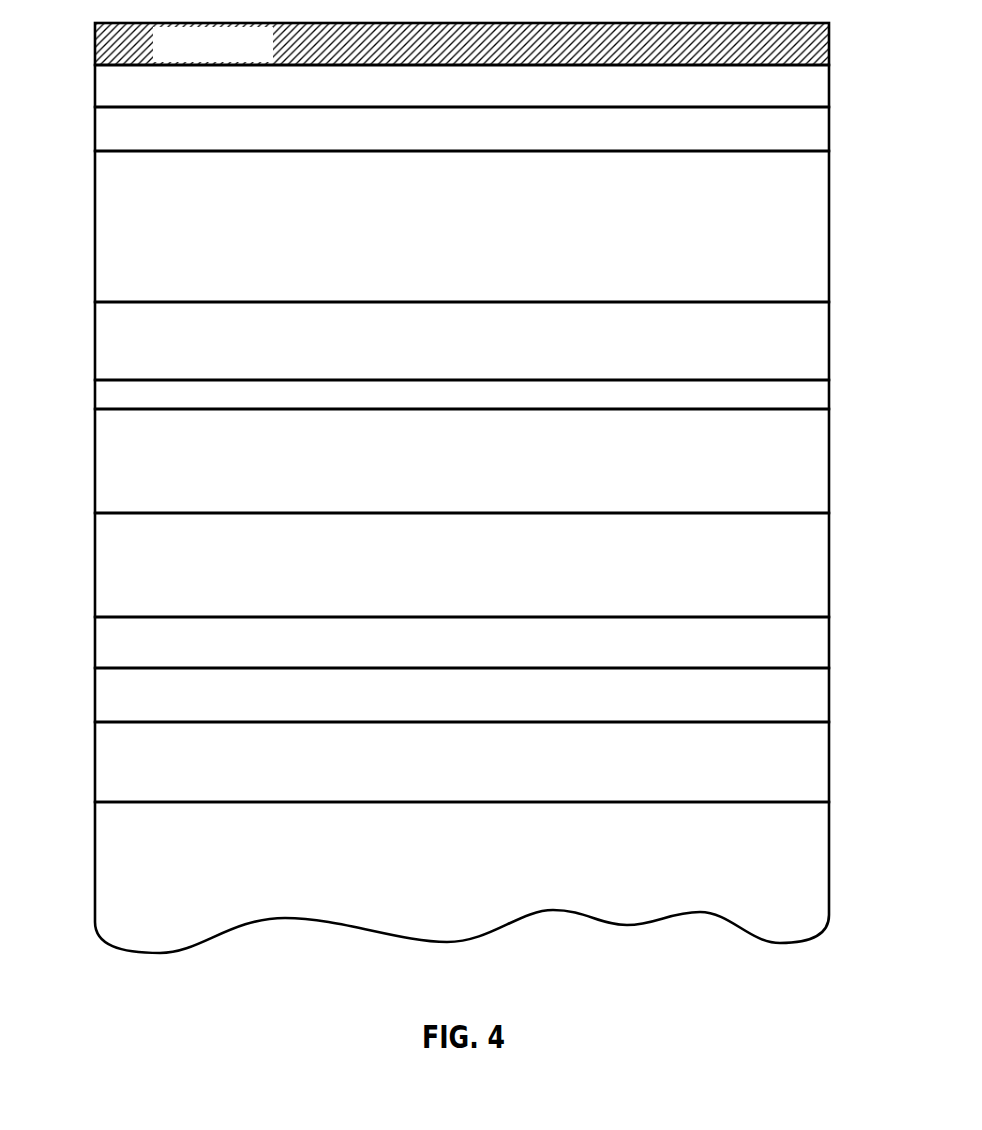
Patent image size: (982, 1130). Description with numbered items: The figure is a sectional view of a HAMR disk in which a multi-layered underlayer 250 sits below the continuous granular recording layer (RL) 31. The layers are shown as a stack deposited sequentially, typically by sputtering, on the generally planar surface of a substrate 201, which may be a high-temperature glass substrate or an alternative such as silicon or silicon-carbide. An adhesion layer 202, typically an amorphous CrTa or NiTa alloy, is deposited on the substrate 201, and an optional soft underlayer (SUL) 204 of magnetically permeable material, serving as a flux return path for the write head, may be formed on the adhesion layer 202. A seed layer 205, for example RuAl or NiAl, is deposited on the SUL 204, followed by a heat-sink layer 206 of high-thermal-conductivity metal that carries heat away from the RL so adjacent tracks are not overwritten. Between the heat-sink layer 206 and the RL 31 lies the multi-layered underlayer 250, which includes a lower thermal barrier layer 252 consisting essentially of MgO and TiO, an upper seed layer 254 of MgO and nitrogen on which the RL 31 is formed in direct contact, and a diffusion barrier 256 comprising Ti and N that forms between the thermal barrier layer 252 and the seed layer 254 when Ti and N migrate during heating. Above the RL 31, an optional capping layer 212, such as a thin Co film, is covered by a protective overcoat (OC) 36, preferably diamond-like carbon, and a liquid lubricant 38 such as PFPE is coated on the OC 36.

The liquid lubricant 38 is at (95, 47).
The protective overcoat 36 is at (95, 88).
The capping layer 212 is at (95, 128).
The recording layer 31 is at (95, 222).
The multi-layered underlayer 250 is at (463, 407).
The seed layer 254 is at (95, 341).
The diffusion barrier 256 is at (95, 394).
The thermal barrier layer 252 is at (95, 461).
The heat-sink layer 206 is at (95, 571).
The seed layer 205 is at (95, 643).
The soft underlayer 204 is at (95, 700).
The adhesion layer 202 is at (95, 758).
The substrate 201 is at (95, 865).